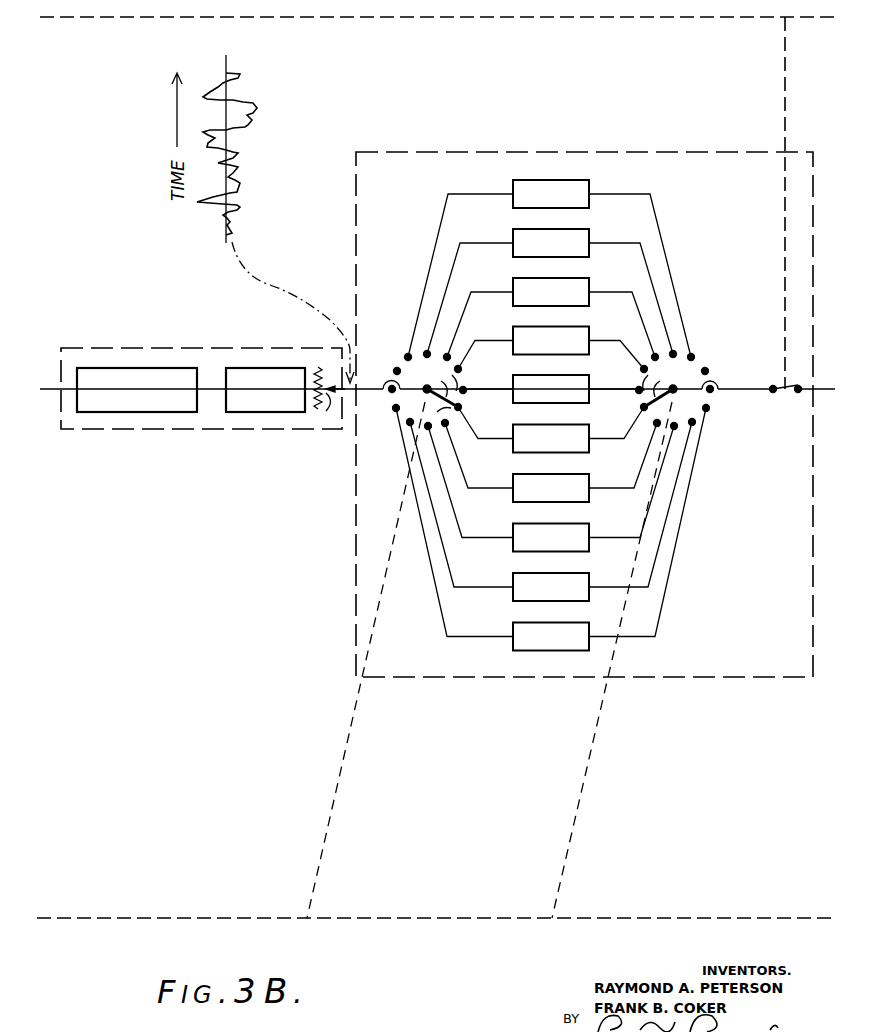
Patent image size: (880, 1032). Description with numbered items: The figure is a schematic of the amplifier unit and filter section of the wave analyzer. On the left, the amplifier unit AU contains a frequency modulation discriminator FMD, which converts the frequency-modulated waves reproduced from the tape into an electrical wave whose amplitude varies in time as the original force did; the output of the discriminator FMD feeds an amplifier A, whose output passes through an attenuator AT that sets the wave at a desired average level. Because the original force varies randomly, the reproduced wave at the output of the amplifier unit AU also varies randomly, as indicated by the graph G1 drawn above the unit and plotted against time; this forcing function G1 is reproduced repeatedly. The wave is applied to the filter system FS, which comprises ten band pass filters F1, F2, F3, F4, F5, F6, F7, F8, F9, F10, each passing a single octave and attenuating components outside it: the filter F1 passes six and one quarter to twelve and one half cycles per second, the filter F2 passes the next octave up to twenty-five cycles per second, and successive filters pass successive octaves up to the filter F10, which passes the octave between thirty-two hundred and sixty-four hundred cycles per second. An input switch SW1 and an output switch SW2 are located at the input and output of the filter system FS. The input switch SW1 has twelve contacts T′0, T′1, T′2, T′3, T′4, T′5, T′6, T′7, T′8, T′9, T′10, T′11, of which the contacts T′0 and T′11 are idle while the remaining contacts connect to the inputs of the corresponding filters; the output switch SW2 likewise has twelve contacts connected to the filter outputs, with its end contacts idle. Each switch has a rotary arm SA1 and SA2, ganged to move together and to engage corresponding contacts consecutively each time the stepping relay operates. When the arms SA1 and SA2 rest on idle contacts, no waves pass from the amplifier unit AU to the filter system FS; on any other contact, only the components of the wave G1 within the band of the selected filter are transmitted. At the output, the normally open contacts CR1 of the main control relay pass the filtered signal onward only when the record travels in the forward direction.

The graph G1 is at (240, 163).
The amplifier unit AU is at (192, 348).
The frequency modulation discriminator FMD is at (115, 368).
The amplifier A is at (272, 368).
The attenuator AT is at (324, 398).
The filter system FS is at (570, 152).
The band pass filter F1 is at (513, 632).
The band pass filter F2 is at (513, 583).
The band pass filter F3 is at (513, 533).
The band pass filter F4 is at (513, 484).
The band pass filter F5 is at (513, 434).
The band pass filter F6 is at (513, 385).
The band pass filter F7 is at (513, 336).
The band pass filter F8 is at (513, 288).
The band pass filter F9 is at (513, 239).
The band pass filter F10 is at (513, 190).
The input switch SW1 is at (398, 339).
The output switch SW2 is at (716, 347).
The rotary arm SA1 is at (434, 389).
The rotary arm SA2 is at (663, 386).
The normally open contacts CR1 is at (782, 394).
The idle contact T′0 is at (391, 394).
The contact T′1 is at (395, 414).
The contact T′2 is at (413, 414).
The contact T′3 is at (428, 430).
The contact T′4 is at (444, 426).
The contact T′5 is at (457, 411).
The contact T′6 is at (465, 393).
The contact T′7 is at (458, 367).
The contact T′8 is at (446, 354).
The contact T′9 is at (427, 351).
The contact T′10 is at (406, 355).
The idle contact T′11 is at (394, 373).